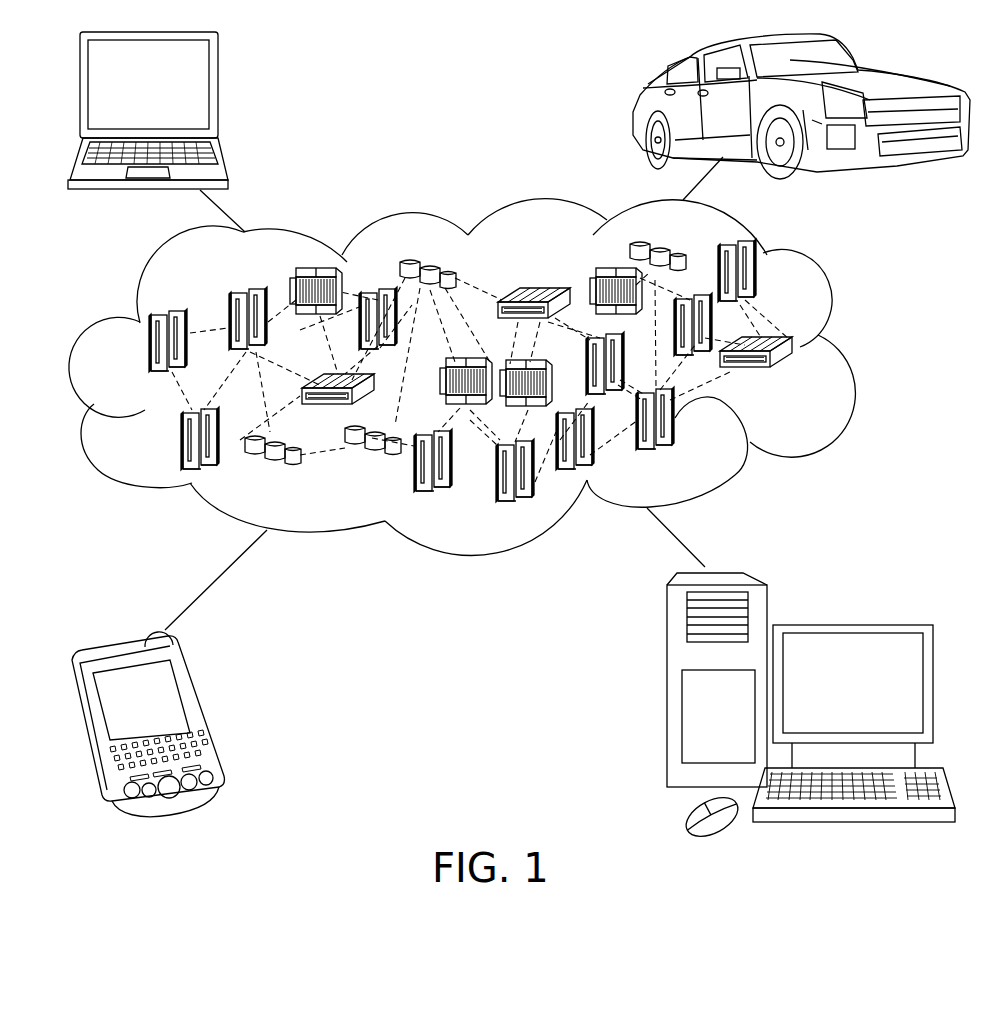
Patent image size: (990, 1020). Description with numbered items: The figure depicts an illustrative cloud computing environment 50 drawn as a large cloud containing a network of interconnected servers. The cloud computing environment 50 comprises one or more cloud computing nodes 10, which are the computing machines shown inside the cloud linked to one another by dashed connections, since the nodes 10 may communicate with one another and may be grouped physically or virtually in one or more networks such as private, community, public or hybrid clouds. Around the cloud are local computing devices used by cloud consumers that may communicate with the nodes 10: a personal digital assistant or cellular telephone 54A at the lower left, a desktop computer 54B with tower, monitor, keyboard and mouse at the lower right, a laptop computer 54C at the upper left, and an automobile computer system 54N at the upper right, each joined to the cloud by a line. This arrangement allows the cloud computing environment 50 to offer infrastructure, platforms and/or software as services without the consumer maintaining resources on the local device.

The cloud computing node 10 is at (797, 380).
The cloud computing environment 50 is at (852, 350).
The personal digital assistant (PDA) or cellular telephone 54A is at (206, 713).
The desktop computer 54B is at (851, 625).
The laptop computer 54C is at (216, 93).
The automobile computer system 54N is at (640, 100).